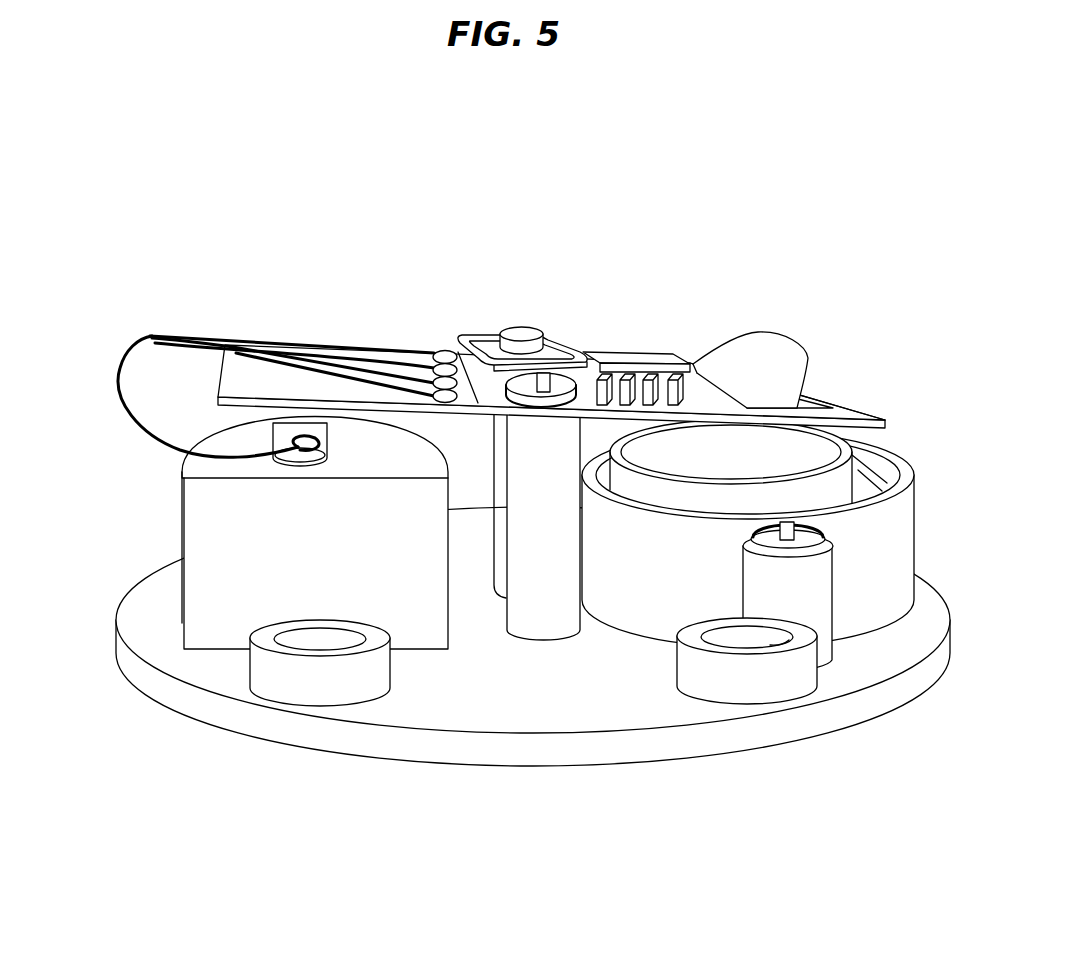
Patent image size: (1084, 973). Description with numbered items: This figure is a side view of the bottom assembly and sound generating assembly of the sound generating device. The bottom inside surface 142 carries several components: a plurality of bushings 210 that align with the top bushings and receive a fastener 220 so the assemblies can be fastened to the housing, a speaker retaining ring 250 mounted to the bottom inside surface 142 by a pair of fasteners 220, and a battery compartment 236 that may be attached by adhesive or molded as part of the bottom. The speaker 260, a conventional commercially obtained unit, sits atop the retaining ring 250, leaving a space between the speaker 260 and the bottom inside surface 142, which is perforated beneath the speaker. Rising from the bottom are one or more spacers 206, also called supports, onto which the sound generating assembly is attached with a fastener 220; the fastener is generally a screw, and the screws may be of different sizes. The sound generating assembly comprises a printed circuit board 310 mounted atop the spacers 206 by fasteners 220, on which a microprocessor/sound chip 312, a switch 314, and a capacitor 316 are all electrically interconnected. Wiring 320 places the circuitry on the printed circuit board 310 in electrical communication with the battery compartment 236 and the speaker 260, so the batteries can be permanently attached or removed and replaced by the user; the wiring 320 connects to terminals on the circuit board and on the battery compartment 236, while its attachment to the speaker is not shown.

The bottom inside surface 142 is at (467, 715).
The spacer 206 is at (549, 600).
The bushing 210 is at (767, 620).
The fastener 220 is at (473, 340).
The battery compartment 236 is at (267, 532).
The speaker retaining ring 250 is at (665, 588).
The speaker 260 is at (786, 459).
The printed circuit board 310 is at (853, 413).
The microprocessor/sound chip 312 is at (641, 372).
The switch 314 is at (523, 343).
The capacitor 316 is at (750, 332).
The wiring 320 is at (123, 342).